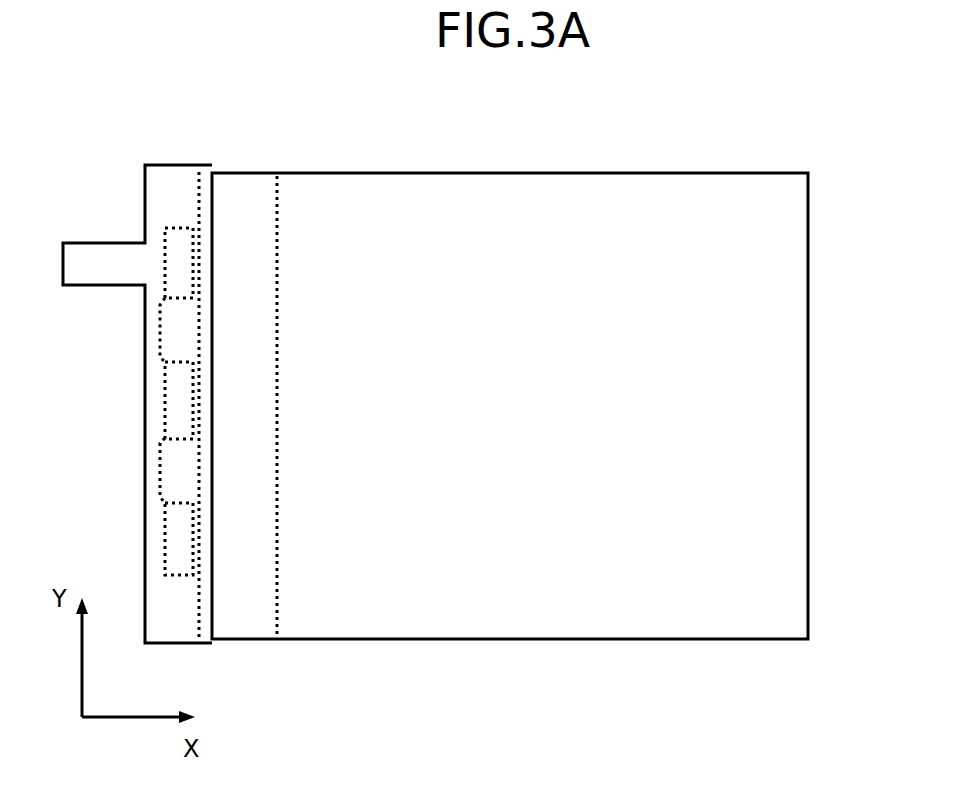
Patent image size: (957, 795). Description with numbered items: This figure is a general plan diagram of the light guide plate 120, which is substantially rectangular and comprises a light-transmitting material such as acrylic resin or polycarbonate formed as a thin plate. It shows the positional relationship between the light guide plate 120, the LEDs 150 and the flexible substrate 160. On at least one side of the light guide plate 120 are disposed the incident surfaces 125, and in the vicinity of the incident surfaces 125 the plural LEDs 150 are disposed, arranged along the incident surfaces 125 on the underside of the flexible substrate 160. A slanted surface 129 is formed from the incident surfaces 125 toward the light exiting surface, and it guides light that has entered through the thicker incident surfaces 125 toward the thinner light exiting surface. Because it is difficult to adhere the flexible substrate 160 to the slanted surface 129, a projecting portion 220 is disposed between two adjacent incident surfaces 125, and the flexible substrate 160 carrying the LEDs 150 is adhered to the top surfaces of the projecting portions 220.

The light guide plate 120 is at (422, 178).
The flexible substrate 160 is at (173, 188).
The slanted surface 129 is at (265, 183).
The projecting portion 220 is at (180, 335).
The LED 150 is at (182, 413).
The incident surface 125 is at (197, 375).